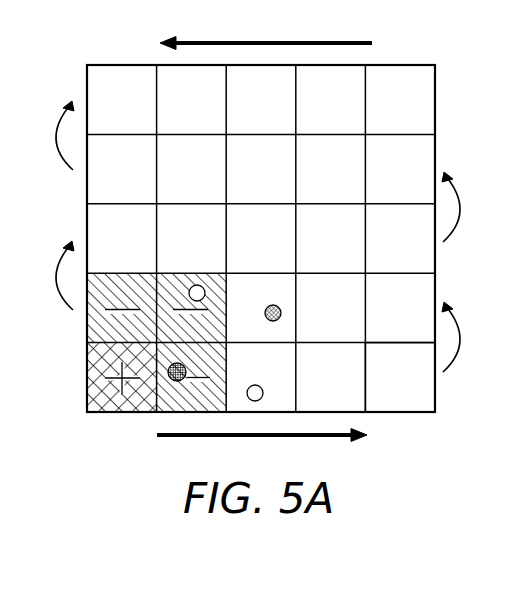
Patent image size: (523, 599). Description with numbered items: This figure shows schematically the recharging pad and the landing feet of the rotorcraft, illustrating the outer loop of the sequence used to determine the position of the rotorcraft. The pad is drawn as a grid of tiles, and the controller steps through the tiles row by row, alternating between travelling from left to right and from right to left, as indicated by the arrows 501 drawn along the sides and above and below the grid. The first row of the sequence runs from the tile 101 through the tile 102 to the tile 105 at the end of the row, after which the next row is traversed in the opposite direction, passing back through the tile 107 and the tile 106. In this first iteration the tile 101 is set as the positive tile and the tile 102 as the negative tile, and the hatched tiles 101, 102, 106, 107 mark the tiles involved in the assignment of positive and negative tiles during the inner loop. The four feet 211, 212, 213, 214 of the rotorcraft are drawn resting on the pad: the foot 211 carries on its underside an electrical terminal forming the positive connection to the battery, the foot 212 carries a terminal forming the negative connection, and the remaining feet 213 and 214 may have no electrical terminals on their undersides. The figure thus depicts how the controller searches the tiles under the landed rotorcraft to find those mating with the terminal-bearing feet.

The tile 101 is at (122, 395).
The tile 102 is at (213, 360).
The tile 105 is at (400, 402).
The tile 106 is at (127, 277).
The tile 107 is at (180, 278).
The foot 211 is at (282, 314).
The foot 212 is at (179, 381).
The foot 213 is at (264, 394).
The foot 214 is at (204, 287).
The arrows 501 is at (73, 170).